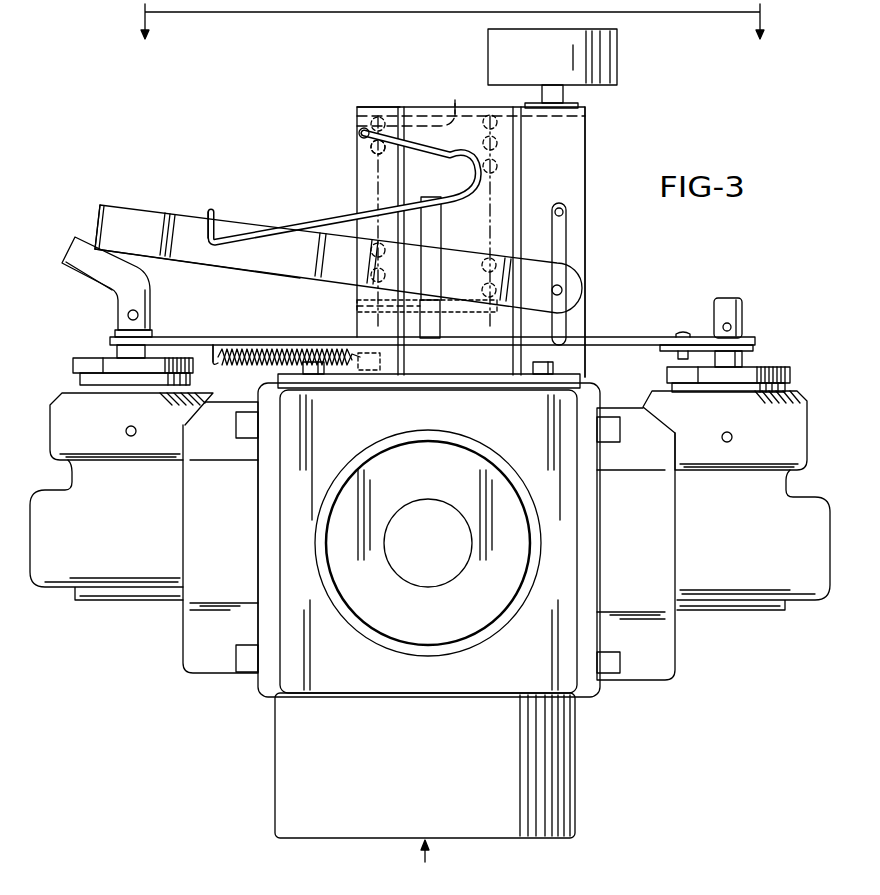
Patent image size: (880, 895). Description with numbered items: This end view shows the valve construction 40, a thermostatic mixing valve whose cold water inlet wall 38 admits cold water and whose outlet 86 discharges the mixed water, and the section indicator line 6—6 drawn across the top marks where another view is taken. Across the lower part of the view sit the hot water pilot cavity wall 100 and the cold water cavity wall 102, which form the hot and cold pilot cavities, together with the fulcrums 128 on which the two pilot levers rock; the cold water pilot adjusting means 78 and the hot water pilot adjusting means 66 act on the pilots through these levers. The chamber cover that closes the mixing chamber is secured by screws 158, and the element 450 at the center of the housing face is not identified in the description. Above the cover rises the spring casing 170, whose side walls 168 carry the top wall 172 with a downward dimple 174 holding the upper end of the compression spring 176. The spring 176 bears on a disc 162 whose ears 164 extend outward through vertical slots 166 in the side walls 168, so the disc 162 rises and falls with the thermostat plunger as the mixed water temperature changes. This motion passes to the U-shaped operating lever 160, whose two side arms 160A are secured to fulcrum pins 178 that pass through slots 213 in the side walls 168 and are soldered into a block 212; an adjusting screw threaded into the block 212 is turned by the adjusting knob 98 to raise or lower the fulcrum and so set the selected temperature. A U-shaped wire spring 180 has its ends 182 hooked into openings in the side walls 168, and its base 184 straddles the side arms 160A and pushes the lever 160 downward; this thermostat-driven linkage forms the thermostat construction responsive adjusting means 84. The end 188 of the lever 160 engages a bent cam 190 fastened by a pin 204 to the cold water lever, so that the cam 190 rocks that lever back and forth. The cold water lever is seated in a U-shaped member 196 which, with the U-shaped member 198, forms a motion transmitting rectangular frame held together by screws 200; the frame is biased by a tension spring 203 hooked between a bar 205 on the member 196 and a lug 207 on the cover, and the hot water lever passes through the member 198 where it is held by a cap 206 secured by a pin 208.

The section line 6- 6 is at (453, 37).
The cold water inlet wall 38 is at (275, 762).
The valve construction 40 is at (790, 216).
The hot water pilot adjusting means 66 is at (797, 328).
The cold water pilot adjusting means 78 is at (90, 324).
The thermostat construction responsive adjusting means 84 is at (243, 202).
The outlet 86 is at (382, 668).
The adjusting knob 98 is at (612, 70).
The hot water pilot cavity wall 100 is at (657, 639).
The cold water cavity wall 102 is at (190, 648).
The fulcrums 128 is at (125, 431).
The screws 158 is at (556, 368).
The operating lever 160 is at (143, 205).
The side arms 160A is at (227, 262).
The disc 162 is at (368, 306).
The ears 164 is at (440, 310).
The vertical slots 166 is at (437, 236).
The side walls 168 is at (568, 153).
The spring casing 170 is at (566, 173).
The top wall 172 is at (358, 107).
The downward dimple 174 is at (455, 100).
The compression spring 176 is at (372, 150).
The fulcrum pins 178 is at (562, 290).
The U-shaped wire spring 180 is at (342, 210).
The ends 182 is at (361, 128).
The base 184 is at (212, 210).
The end 188 is at (95, 208).
The bent cam 190 is at (80, 240).
The U-shaped member 196 is at (213, 337).
The U-shaped member 198 is at (758, 344).
The screws 200 is at (684, 333).
The tension spring 203 is at (243, 365).
The pin 204 is at (137, 312).
The bar 205 is at (222, 352).
The cap 206 is at (730, 300).
The lug 207 is at (373, 362).
The pin 208 is at (733, 323).
The block 212 is at (560, 244).
The slots 213 is at (563, 213).
The cover plate 450 is at (440, 378).